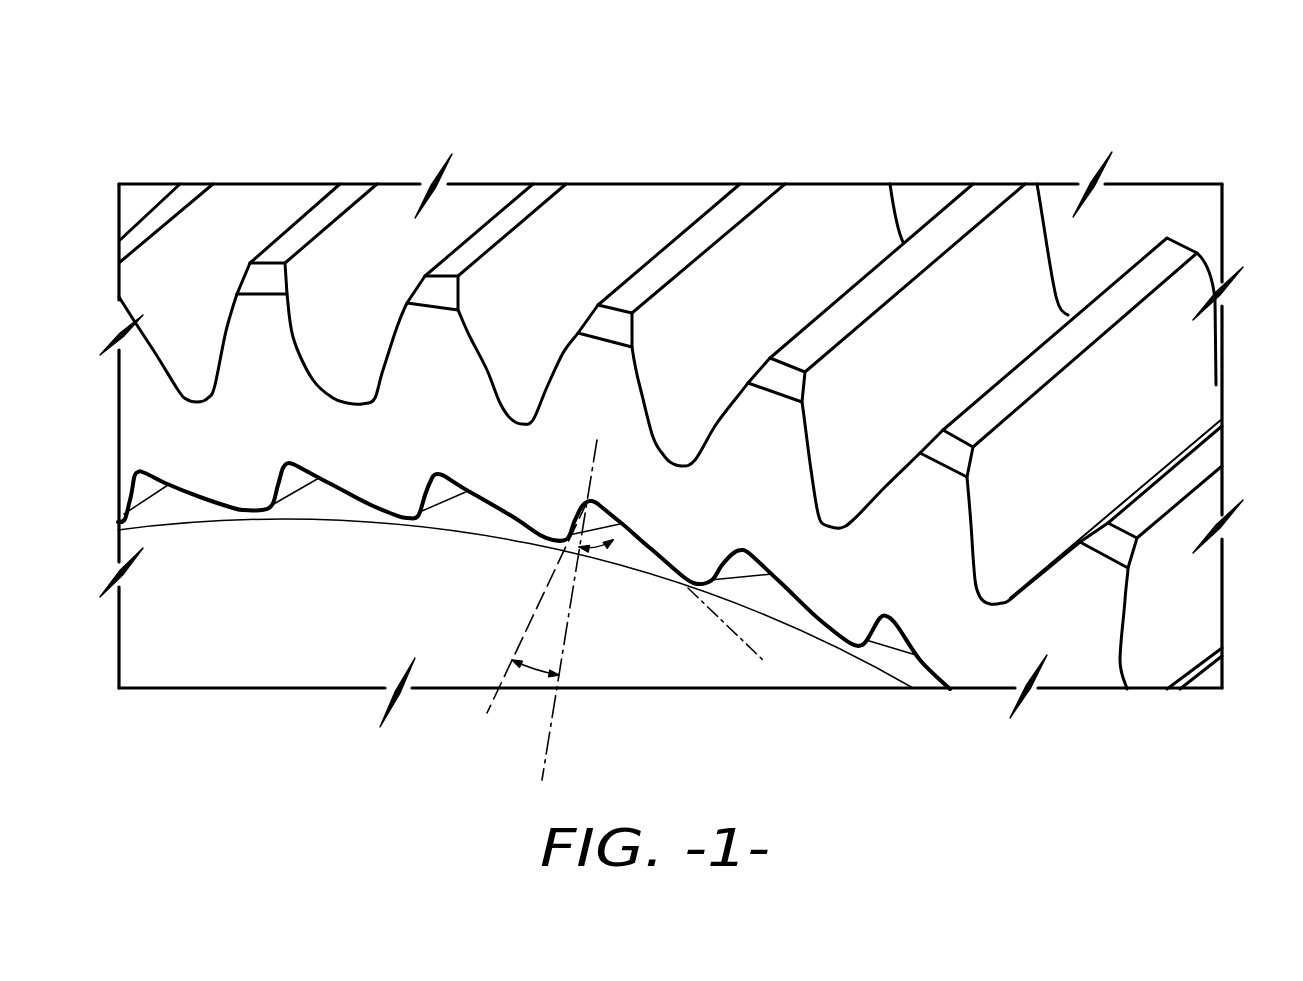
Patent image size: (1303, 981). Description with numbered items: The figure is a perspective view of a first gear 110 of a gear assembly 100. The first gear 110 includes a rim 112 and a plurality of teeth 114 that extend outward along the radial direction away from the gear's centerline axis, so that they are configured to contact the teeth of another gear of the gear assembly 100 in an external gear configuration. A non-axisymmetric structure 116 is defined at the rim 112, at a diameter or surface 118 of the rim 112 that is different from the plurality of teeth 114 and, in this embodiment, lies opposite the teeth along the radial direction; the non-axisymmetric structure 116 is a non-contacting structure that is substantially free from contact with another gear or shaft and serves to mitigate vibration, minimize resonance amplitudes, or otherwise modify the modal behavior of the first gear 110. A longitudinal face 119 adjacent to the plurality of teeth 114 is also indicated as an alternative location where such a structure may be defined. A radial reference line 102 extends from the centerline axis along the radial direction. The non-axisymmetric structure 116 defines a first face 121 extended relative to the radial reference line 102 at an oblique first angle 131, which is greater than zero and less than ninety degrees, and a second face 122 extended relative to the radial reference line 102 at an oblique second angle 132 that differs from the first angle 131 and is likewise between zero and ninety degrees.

The gear assembly 100 is at (698, 399).
The radial reference line 102 is at (557, 707).
The first gear 110 is at (631, 475).
The rim 112 is at (494, 567).
The plurality of teeth 114 is at (1063, 350).
The non-axisymmetric structure 116 is at (750, 586).
The surface 118 is at (137, 391).
The longitudinal face 119 is at (186, 414).
The first face 121 is at (292, 478).
The second face 122 is at (478, 510).
The first angle 131 is at (530, 678).
The second angle 132 is at (608, 560).